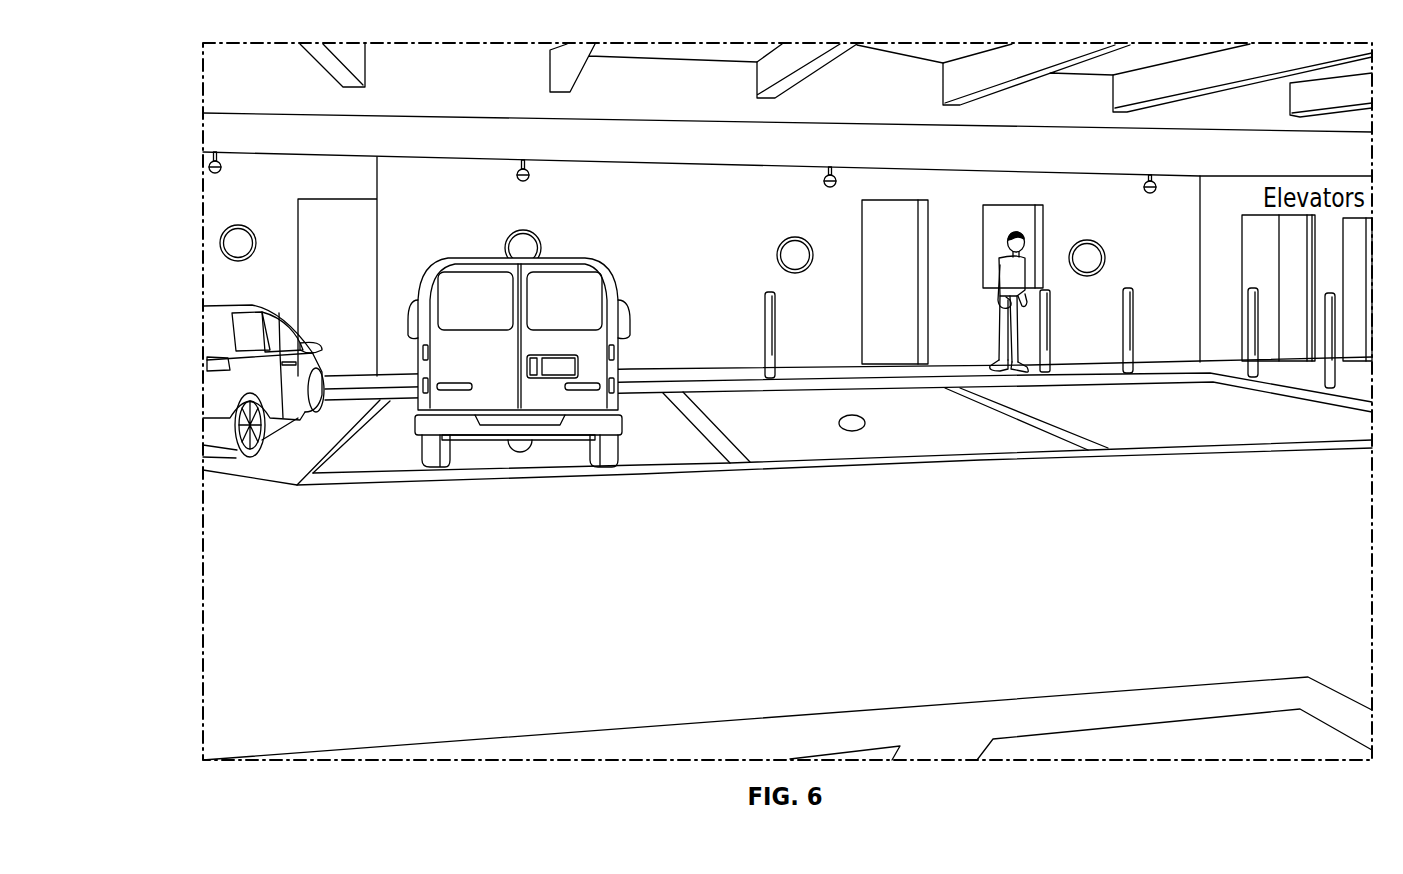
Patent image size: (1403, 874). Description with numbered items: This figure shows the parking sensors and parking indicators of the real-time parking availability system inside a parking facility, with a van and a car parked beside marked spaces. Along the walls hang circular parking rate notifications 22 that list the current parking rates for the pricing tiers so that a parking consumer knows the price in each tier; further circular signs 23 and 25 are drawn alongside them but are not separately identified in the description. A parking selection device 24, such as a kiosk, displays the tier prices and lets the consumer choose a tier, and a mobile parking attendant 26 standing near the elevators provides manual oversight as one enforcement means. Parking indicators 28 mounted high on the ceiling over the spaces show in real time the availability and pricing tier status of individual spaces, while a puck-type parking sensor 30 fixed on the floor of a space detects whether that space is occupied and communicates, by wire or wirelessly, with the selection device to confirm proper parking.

The parking rate notifications 22 is at (238, 230).
The parking price sign ($$$) 23 is at (523, 235).
The parking selection device 24 is at (795, 242).
The parking price sign ($$$) 25 is at (1087, 245).
The mobile parking attendant 26 is at (996, 257).
The parking indicators 28 is at (544, 176).
The parking sensors 30 is at (867, 424).